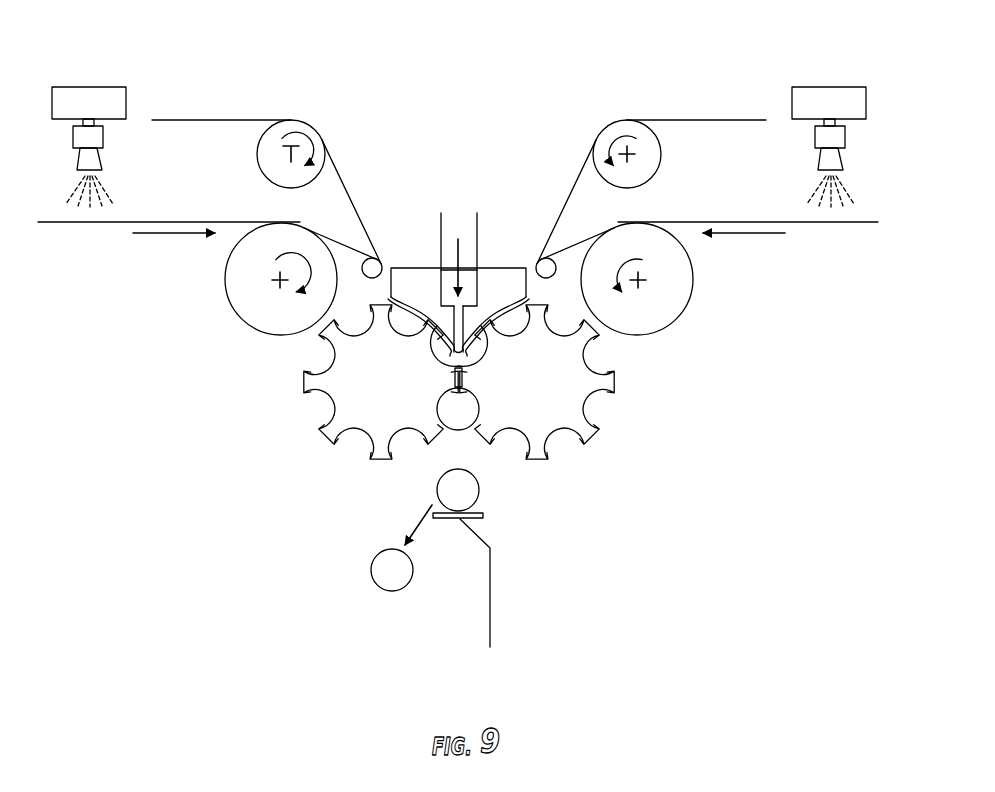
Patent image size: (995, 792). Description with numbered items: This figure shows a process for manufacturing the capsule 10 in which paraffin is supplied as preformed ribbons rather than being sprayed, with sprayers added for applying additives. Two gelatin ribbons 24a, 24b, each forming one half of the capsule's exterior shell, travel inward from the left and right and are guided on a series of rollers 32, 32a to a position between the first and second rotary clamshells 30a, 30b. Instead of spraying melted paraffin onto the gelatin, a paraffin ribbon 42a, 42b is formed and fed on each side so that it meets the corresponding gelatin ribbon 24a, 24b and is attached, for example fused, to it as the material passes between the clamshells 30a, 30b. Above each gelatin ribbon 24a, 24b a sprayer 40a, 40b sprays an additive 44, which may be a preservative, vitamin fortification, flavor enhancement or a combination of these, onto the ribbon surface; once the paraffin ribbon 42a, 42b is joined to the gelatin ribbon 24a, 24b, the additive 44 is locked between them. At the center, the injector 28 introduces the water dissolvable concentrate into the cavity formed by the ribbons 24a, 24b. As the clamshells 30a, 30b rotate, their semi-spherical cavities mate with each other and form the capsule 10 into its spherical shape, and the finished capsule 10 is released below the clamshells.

The capsule 10 is at (484, 489).
The ribbon 24a is at (168, 222).
The ribbon 24b is at (704, 222).
The injector 28 is at (470, 288).
The first rotary clamshell 30a is at (365, 408).
The second rotary clamshell 30b is at (553, 408).
The roller 32 is at (296, 252).
The roller 32a is at (373, 258).
The sprayer 40a is at (92, 92).
The sprayer 40b is at (826, 92).
The paraffin ribbon 42a is at (172, 120).
The paraffin ribbon 42b is at (701, 120).
The additive 44 is at (70, 192).